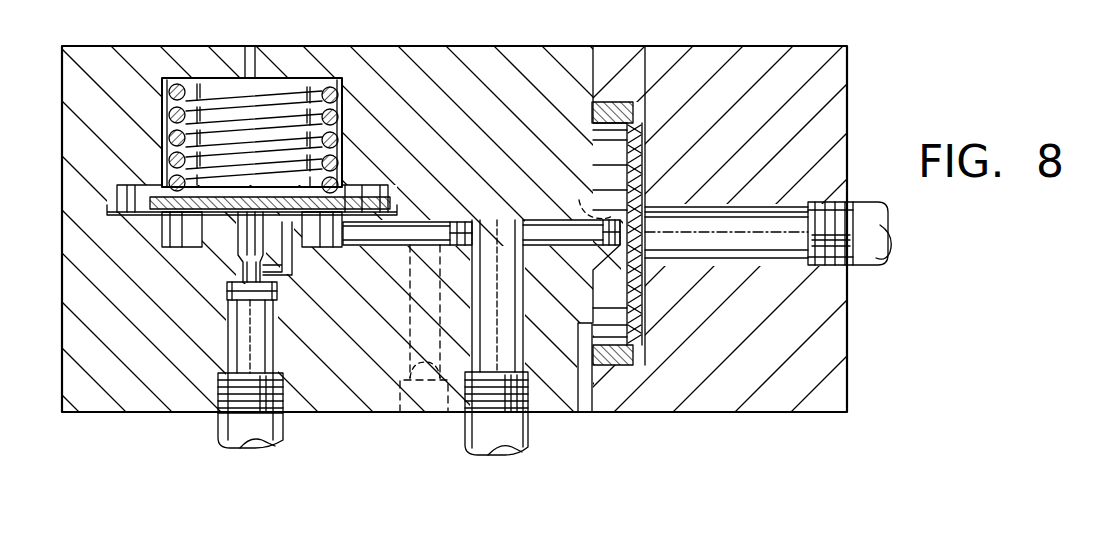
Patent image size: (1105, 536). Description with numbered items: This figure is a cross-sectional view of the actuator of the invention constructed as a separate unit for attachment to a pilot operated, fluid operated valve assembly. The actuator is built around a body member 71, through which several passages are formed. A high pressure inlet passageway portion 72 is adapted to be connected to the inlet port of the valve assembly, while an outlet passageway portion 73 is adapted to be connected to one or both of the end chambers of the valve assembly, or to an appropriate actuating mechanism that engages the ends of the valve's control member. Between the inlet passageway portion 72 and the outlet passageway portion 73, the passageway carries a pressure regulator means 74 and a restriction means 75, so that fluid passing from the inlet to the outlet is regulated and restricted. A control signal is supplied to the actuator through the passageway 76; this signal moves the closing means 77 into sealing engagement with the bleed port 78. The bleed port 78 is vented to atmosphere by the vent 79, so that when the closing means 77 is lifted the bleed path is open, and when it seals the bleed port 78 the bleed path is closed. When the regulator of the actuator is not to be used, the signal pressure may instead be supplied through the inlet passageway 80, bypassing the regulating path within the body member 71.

The body member 71 is at (552, 230).
The high pressure inlet passageway portion 72 is at (229, 334).
The outlet passageway portion 73 is at (519, 318).
The pressure regulator means 74 is at (232, 249).
The restriction means 75 is at (456, 221).
The passageway 76 is at (743, 212).
The closing means 77 is at (650, 308).
The bleed port 78 is at (586, 251).
The vent 79 is at (587, 398).
The inlet passageway 80 is at (421, 412).